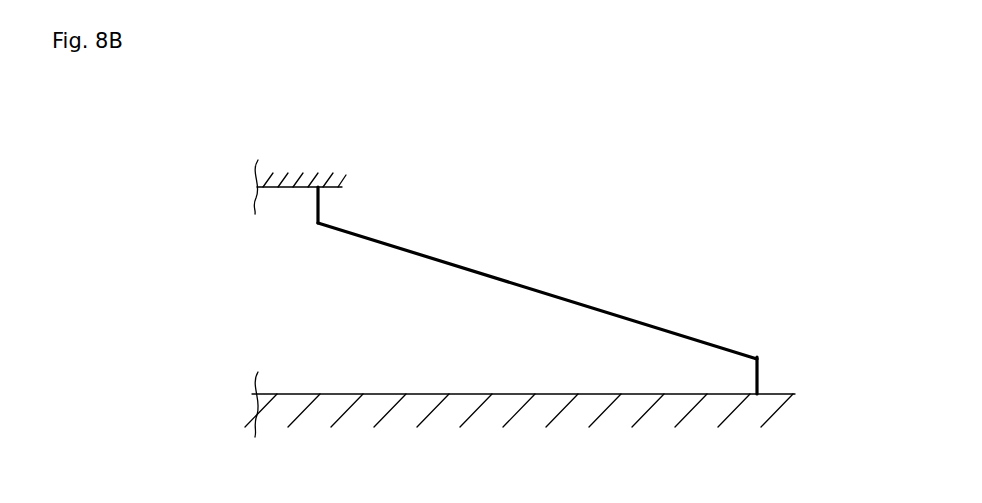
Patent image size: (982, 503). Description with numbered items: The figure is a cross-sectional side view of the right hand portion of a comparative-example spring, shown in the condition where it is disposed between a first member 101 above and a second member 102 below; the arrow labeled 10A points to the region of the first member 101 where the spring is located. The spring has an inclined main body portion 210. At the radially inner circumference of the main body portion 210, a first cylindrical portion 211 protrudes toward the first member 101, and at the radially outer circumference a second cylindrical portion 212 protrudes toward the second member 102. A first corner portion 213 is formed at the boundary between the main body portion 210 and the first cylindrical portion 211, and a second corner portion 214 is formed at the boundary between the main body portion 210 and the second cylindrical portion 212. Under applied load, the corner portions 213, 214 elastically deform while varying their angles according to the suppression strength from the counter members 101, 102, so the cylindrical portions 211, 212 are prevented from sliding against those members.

The display device 10A is at (281, 218).
The first member 101 is at (307, 180).
The second member 102 is at (363, 414).
The main body portion 210 is at (488, 271).
The first cylindrical portion 211 is at (320, 212).
The second cylindrical portion 212 is at (759, 380).
The first corner portion 213 is at (319, 224).
The second corner portion 214 is at (757, 359).